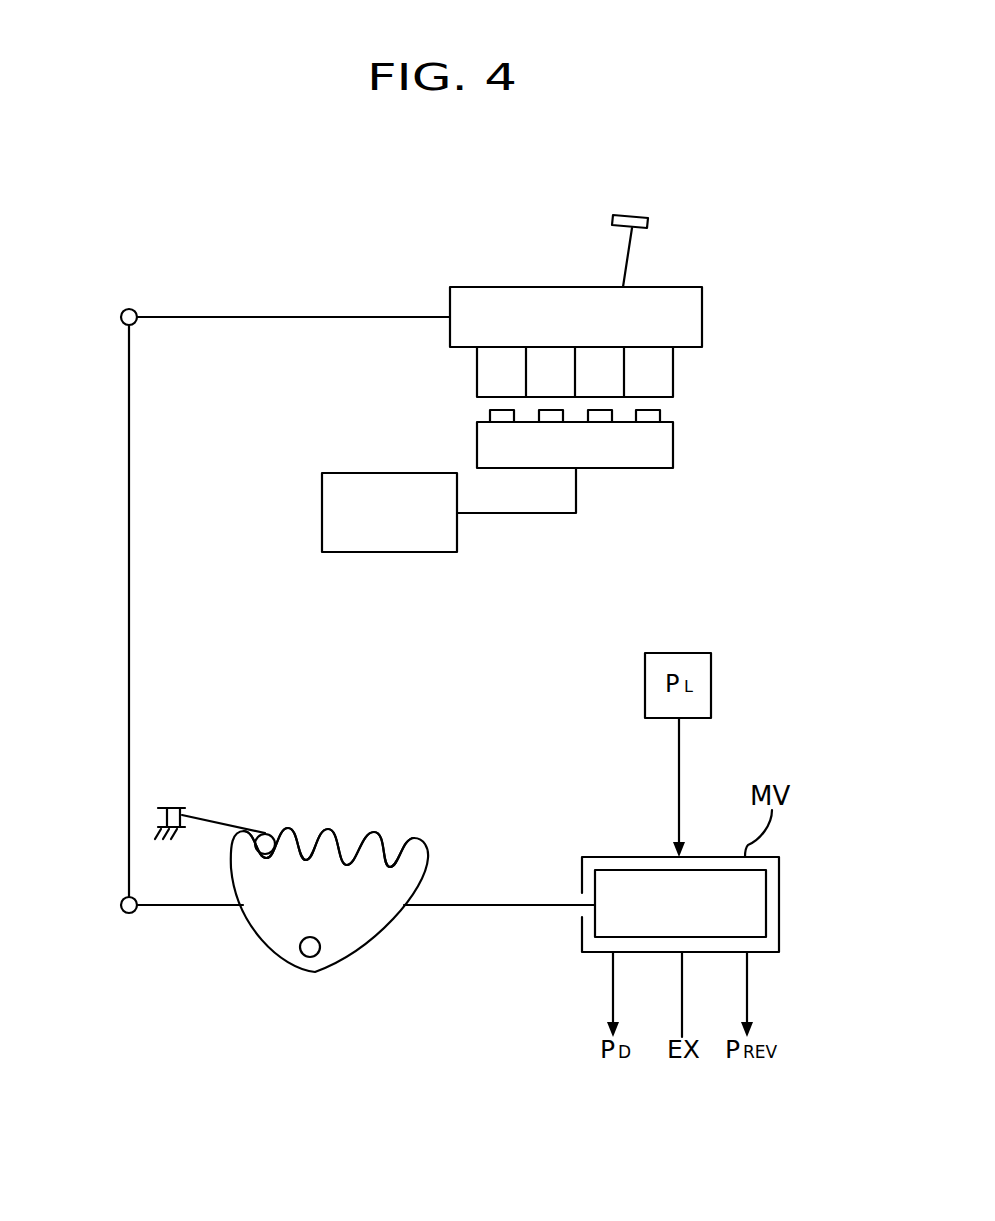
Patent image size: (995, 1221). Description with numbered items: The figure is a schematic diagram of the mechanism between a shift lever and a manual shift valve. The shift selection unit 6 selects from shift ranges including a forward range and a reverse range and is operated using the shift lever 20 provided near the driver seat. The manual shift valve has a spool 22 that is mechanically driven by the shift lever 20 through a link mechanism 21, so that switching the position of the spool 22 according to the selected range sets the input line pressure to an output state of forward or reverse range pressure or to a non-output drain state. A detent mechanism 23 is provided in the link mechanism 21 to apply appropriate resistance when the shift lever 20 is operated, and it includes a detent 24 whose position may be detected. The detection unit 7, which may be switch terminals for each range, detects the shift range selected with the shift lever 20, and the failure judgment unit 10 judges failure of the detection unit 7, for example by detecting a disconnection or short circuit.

The shift selection unit 6 is at (718, 291).
The detection unit 7 is at (675, 442).
The failure judgment unit 10 is at (362, 552).
The shift lever 20 is at (630, 246).
The link mechanism 21 is at (128, 485).
The spool 22 is at (755, 903).
The detent mechanism 23 is at (420, 843).
The detent 24 is at (373, 920).